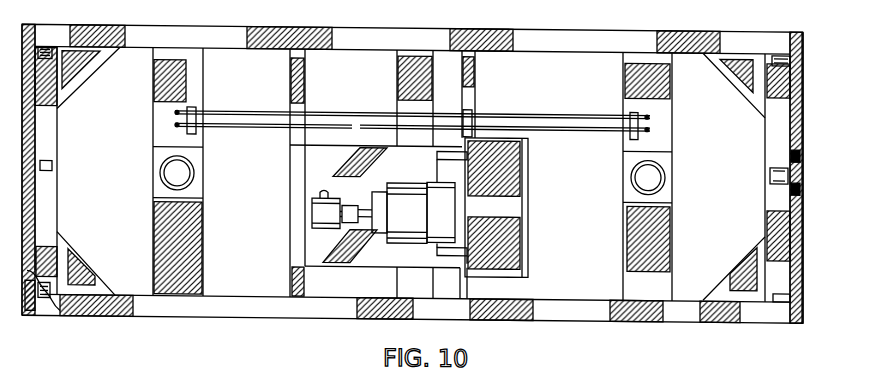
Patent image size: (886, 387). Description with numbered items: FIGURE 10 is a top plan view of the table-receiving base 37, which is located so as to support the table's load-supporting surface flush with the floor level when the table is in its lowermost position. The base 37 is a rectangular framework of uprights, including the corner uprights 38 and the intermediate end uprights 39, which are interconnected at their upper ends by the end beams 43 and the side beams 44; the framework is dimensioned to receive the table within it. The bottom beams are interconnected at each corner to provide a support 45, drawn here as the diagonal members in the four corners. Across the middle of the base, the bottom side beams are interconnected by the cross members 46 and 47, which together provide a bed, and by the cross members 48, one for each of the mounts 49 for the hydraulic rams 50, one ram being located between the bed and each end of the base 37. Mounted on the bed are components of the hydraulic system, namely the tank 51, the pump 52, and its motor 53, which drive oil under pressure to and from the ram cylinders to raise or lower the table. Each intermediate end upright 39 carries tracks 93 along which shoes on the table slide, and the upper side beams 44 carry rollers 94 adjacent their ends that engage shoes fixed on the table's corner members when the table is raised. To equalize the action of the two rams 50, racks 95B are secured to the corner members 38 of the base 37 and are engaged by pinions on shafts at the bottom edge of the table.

The base 37 is at (612, 319).
The corner uprights 38 is at (25, 317).
The intermediate end uprights 39 is at (790, 152).
The end beams 43 is at (58, 226).
The side beams 44 is at (190, 306).
The support 45 is at (93, 280).
The cross member 46 is at (292, 275).
The cross member 47 is at (408, 274).
The cross members 48 is at (195, 266).
The mounts 49 is at (203, 178).
The hydraulic rams 50 is at (158, 174).
The tank 51 is at (300, 180).
The pump 52 is at (312, 204).
The motor 53 is at (400, 178).
The tracks 93 is at (52, 164).
The rollers 94 is at (50, 55).
The racks 95B is at (53, 300).